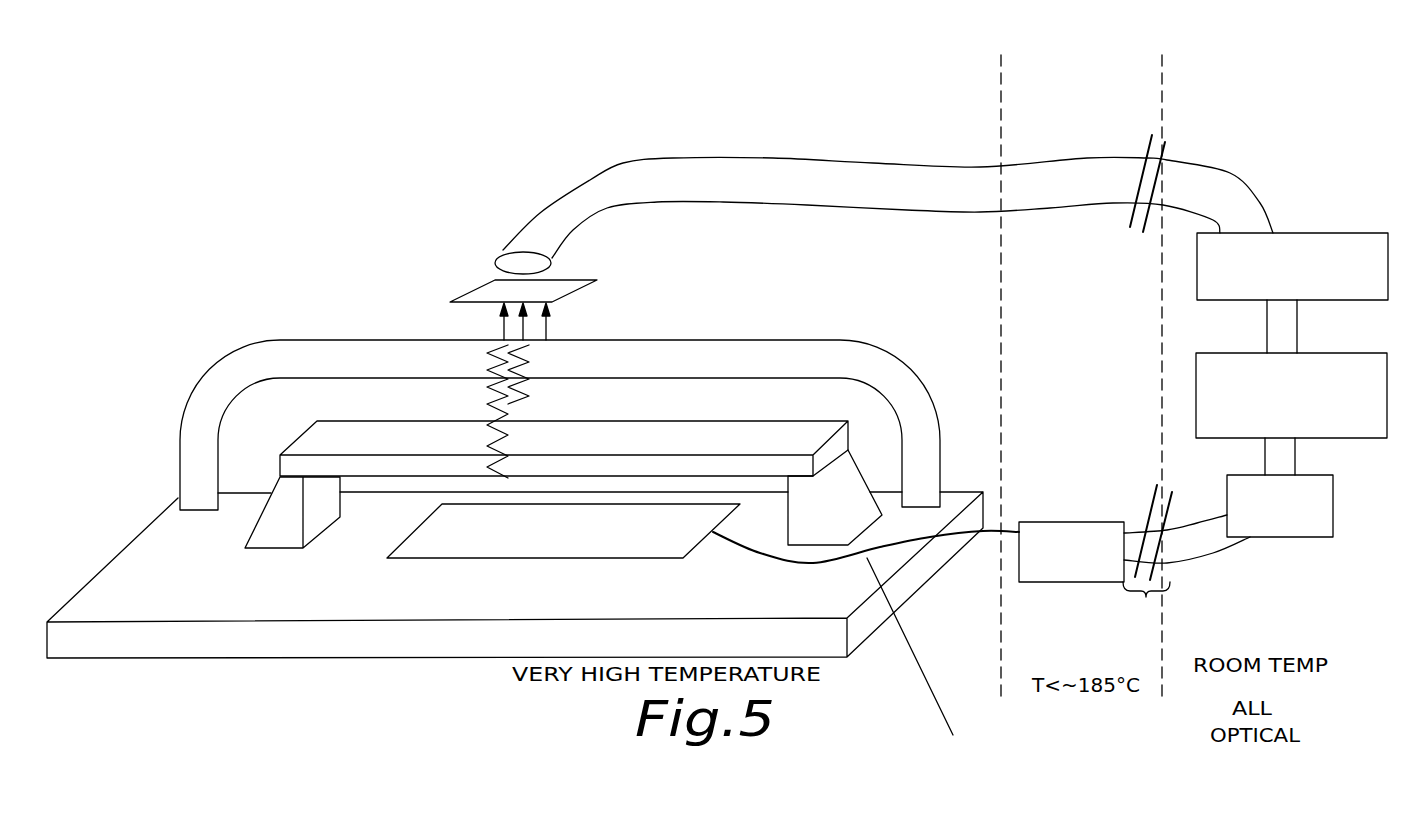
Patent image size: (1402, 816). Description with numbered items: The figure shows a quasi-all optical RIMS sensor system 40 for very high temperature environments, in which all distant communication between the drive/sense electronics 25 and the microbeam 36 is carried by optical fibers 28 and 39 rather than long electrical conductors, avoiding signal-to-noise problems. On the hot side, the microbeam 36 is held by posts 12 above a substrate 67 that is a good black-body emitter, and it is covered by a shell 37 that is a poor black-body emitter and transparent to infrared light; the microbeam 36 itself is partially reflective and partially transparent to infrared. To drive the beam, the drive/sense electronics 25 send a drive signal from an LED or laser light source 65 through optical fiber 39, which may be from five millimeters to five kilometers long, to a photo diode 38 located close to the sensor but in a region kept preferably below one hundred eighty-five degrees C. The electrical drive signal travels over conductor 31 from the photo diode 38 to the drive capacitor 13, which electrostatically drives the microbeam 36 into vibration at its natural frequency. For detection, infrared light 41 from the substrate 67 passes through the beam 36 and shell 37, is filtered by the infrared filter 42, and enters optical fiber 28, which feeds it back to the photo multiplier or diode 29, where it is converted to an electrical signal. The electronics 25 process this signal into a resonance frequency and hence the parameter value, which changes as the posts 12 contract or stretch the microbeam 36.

The posts 12 is at (283, 534).
The drive capacitor 13 is at (479, 558).
The drive/sense electronics 25 is at (1345, 438).
The optical fiber 28 is at (1112, 157).
The photo multiplier or diode 29 is at (1333, 300).
The conductor 31 is at (738, 540).
The microbeam 36 is at (598, 417).
The shell 37 is at (906, 393).
The photo diode 38 is at (1075, 522).
The optical fiber 39 is at (1225, 550).
The quasi-all optical RIMS sensor system 40 is at (1262, 131).
The light 41 is at (543, 355).
The infrared filter 42 is at (597, 281).
The light source 65 is at (1333, 503).
The substrate 67 is at (895, 589).